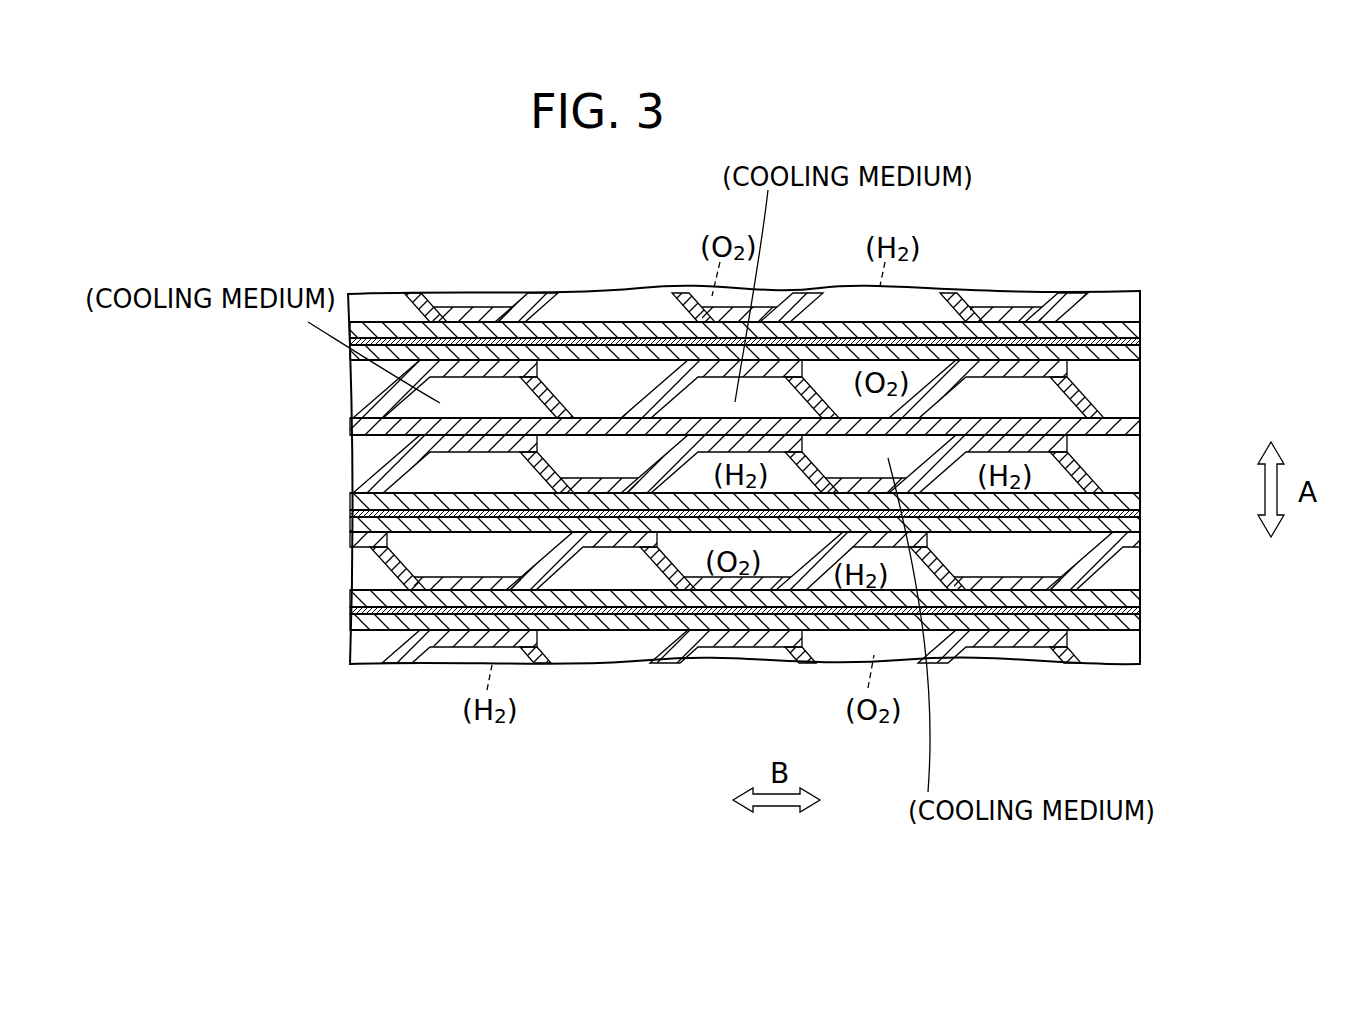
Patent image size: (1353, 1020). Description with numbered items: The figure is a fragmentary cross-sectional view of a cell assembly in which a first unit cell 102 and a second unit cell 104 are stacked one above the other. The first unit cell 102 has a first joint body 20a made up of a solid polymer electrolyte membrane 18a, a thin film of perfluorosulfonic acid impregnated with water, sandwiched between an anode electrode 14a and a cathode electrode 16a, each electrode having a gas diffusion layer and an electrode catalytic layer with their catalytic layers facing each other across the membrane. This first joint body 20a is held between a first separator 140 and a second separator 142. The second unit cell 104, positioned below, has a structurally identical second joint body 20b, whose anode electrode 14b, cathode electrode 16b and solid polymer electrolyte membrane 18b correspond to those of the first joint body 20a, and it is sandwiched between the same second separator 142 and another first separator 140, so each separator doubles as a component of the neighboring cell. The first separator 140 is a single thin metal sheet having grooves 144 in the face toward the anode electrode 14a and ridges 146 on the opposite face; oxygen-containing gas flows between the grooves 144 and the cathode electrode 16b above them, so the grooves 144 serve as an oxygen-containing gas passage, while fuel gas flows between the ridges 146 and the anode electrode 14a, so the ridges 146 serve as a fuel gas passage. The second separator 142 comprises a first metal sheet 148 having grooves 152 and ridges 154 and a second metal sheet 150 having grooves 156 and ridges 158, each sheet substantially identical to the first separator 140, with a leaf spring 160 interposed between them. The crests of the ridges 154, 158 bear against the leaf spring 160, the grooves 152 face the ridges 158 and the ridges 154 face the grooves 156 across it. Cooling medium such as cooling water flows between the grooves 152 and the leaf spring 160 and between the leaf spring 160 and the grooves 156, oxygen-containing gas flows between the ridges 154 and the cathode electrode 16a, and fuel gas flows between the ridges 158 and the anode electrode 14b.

The first unit cell 102 is at (811, 475).
The second unit cell 104 is at (719, 478).
The first separator 140 is at (400, 312).
The second separator 142 is at (745, 453).
The grooves 144 is at (800, 296).
The ridges 146 is at (600, 547).
The first metal sheet 148 is at (522, 374).
The second metal sheet 150 is at (604, 414).
The grooves 152 is at (468, 362).
The ridges 154 is at (1117, 395).
The grooves 156 is at (560, 468).
The ridges 158 is at (497, 450).
The leaf spring 160 is at (1013, 420).
The anode electrode 14a is at (1007, 326).
The cathode electrode 16a is at (963, 229).
The solid polymer electrolyte membrane 18a is at (1077, 340).
The first joint body 20a is at (758, 475).
The anode electrode 14b is at (980, 503).
The cathode electrode 16b is at (1103, 530).
The solid polymer electrolyte membrane 18b is at (1047, 517).
The second joint body 20b is at (748, 635).